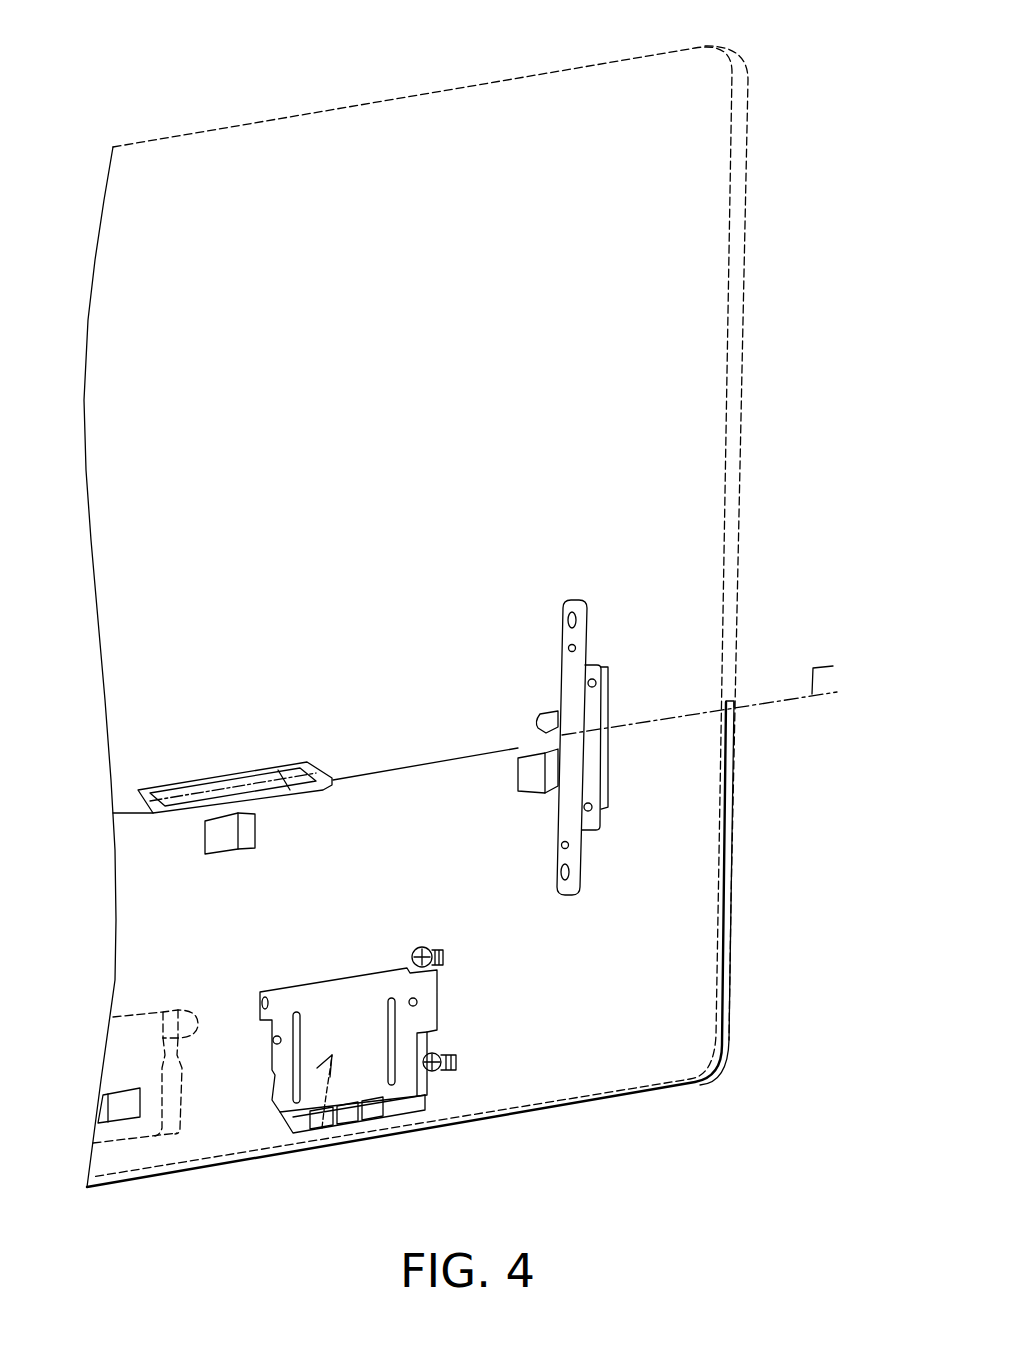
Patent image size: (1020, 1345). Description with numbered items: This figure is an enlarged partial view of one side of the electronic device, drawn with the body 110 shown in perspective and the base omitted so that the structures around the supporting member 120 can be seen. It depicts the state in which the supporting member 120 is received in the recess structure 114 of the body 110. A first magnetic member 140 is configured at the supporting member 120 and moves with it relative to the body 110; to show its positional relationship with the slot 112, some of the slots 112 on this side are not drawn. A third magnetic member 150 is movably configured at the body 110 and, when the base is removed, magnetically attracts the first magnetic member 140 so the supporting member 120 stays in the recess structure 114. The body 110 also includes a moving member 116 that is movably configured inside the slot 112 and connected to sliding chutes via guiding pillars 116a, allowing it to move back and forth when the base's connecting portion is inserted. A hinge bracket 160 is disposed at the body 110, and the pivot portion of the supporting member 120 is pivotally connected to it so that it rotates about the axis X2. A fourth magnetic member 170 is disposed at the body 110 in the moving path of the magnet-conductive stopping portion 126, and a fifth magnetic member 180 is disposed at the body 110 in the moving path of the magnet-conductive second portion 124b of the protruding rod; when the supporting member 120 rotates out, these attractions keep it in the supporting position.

The body 110 is at (373, 100).
The supporting member 120 is at (732, 890).
The recess structure 114 is at (725, 988).
The axis X2 is at (713, 692).
The stopping portion 126 is at (210, 790).
The fourth magnetic member 170 is at (227, 837).
The fifth magnetic member 180 is at (538, 772).
The second portion of the protruding rod 124b is at (548, 720).
The hinge bracket 160 is at (570, 705).
The first magnetic member 140 is at (118, 1117).
The guiding pillars 116a is at (288, 1098).
The moving member 116 is at (400, 1107).
The third magnetic member 150 is at (352, 1112).
The slot 112 is at (322, 1135).